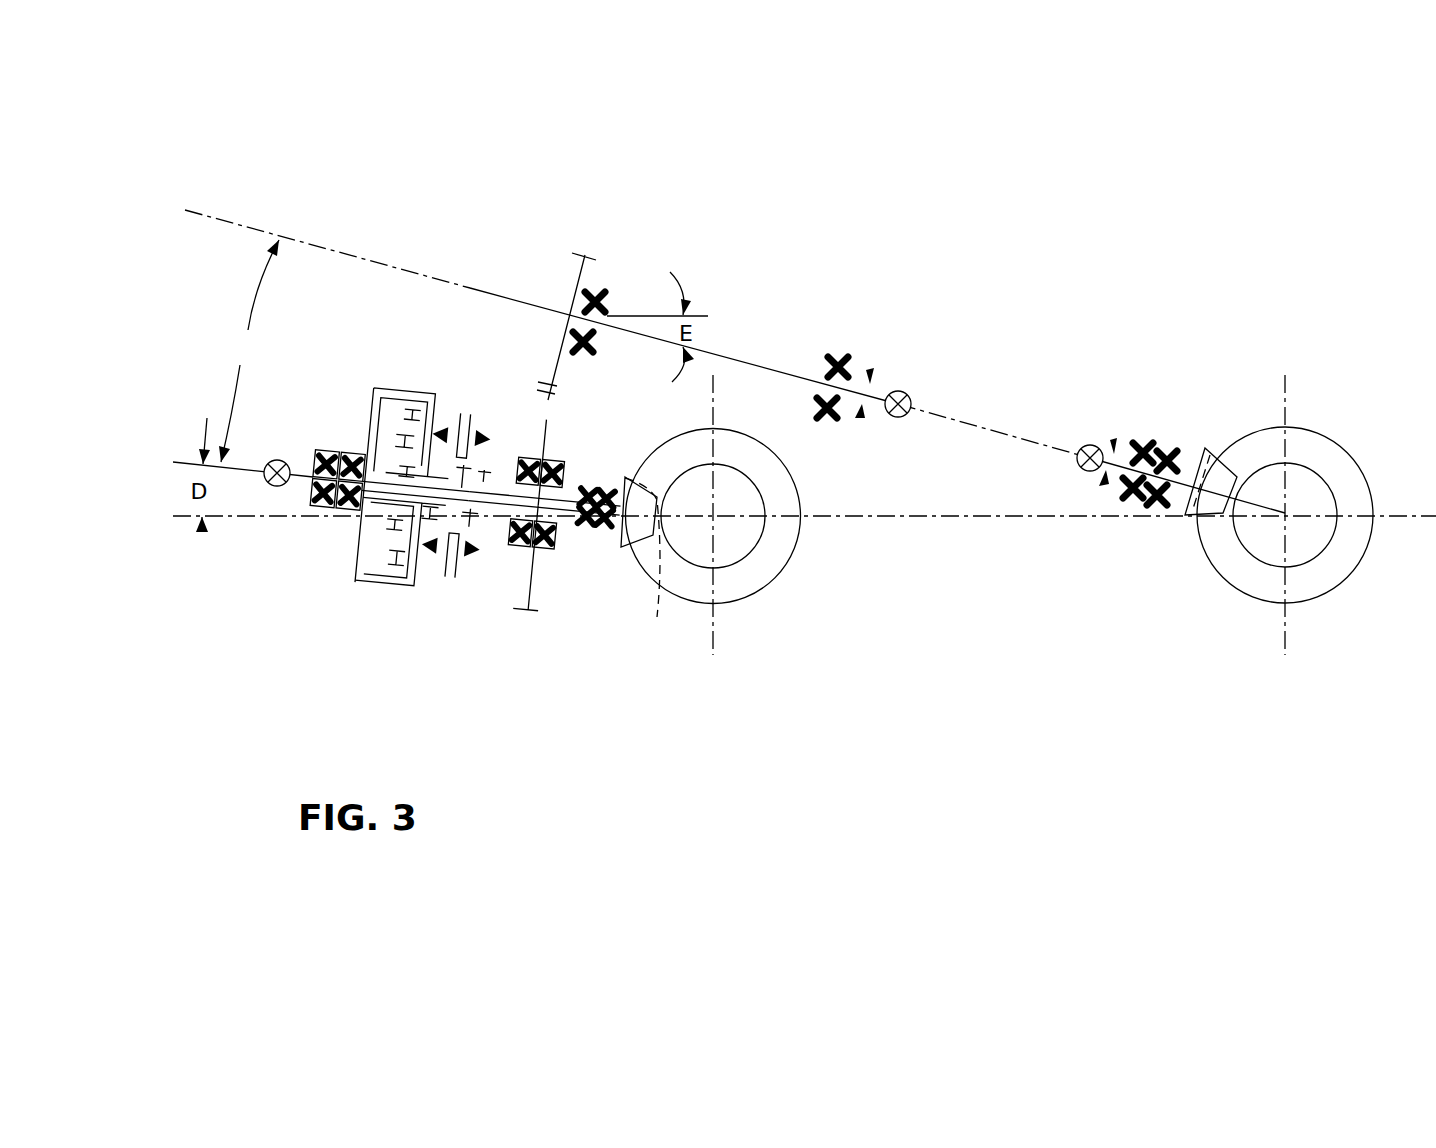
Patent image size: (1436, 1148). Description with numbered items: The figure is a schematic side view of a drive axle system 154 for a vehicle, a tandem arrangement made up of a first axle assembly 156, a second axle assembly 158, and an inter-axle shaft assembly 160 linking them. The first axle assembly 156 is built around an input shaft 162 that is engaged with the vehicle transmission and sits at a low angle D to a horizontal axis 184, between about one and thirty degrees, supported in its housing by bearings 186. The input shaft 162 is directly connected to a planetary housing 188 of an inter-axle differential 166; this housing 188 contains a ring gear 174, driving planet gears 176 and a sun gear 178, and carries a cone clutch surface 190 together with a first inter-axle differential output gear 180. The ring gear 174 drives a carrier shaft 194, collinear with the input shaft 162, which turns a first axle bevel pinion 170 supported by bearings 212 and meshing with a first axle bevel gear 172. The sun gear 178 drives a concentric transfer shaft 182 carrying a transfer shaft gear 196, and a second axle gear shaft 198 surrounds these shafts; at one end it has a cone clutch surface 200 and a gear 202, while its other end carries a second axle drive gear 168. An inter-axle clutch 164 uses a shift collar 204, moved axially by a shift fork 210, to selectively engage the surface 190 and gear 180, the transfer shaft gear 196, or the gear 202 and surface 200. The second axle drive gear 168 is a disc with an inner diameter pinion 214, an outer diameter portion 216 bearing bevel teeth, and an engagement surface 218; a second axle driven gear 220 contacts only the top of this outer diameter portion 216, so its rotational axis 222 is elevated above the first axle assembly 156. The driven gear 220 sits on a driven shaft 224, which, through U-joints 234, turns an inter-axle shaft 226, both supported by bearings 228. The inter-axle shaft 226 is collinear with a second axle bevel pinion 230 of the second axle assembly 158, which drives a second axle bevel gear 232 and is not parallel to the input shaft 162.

The drive axle system 154 is at (815, 243).
The first axle assembly 156 is at (574, 643).
The second axle assembly 158 is at (1200, 612).
The inter-axle shaft assembly 160 is at (811, 322).
The input shaft 162 is at (289, 461).
The inter-axle clutch 164 is at (478, 362).
The inter-axle differential 166 is at (386, 370).
The second axle drive gear 168 is at (552, 420).
The first axle bevel pinion 170 is at (649, 560).
The first axle bevel gear 172 is at (757, 590).
The ring gear 174 is at (414, 407).
The driving planet gears 176 is at (405, 415).
The sun gear 178 is at (398, 503).
The first inter-axle differential output gear 180 is at (425, 455).
The transfer shaft 182 is at (430, 520).
The horizontal axis 184 is at (953, 520).
The bearings 186 is at (312, 492).
The planetary housing 188 is at (368, 588).
The cone clutch surface 190 is at (425, 562).
The carrier shaft 194 is at (567, 503).
The transfer shaft gear 196 is at (462, 508).
The second axle gear shaft 198 is at (507, 470).
The cone clutch surface 200 is at (466, 416).
The gear 202 is at (445, 468).
The shift collar 204 is at (462, 568).
The shift fork 210 is at (528, 612).
The bearings 212 is at (597, 530).
The inner diameter pinion 214 is at (565, 452).
The outer diameter portion 216 is at (575, 404).
The engagement surface 218 is at (556, 391).
The second axle driven gear 220 is at (578, 272).
The rotational axis 222 is at (348, 258).
The driven shaft 224 is at (735, 359).
The inter-axle shaft 226 is at (1010, 432).
The bearings 228 is at (602, 292).
The second axle bevel pinion 230 is at (1190, 520).
The second axle bevel gear 232 is at (1327, 590).
The U-joints 234 is at (907, 400).